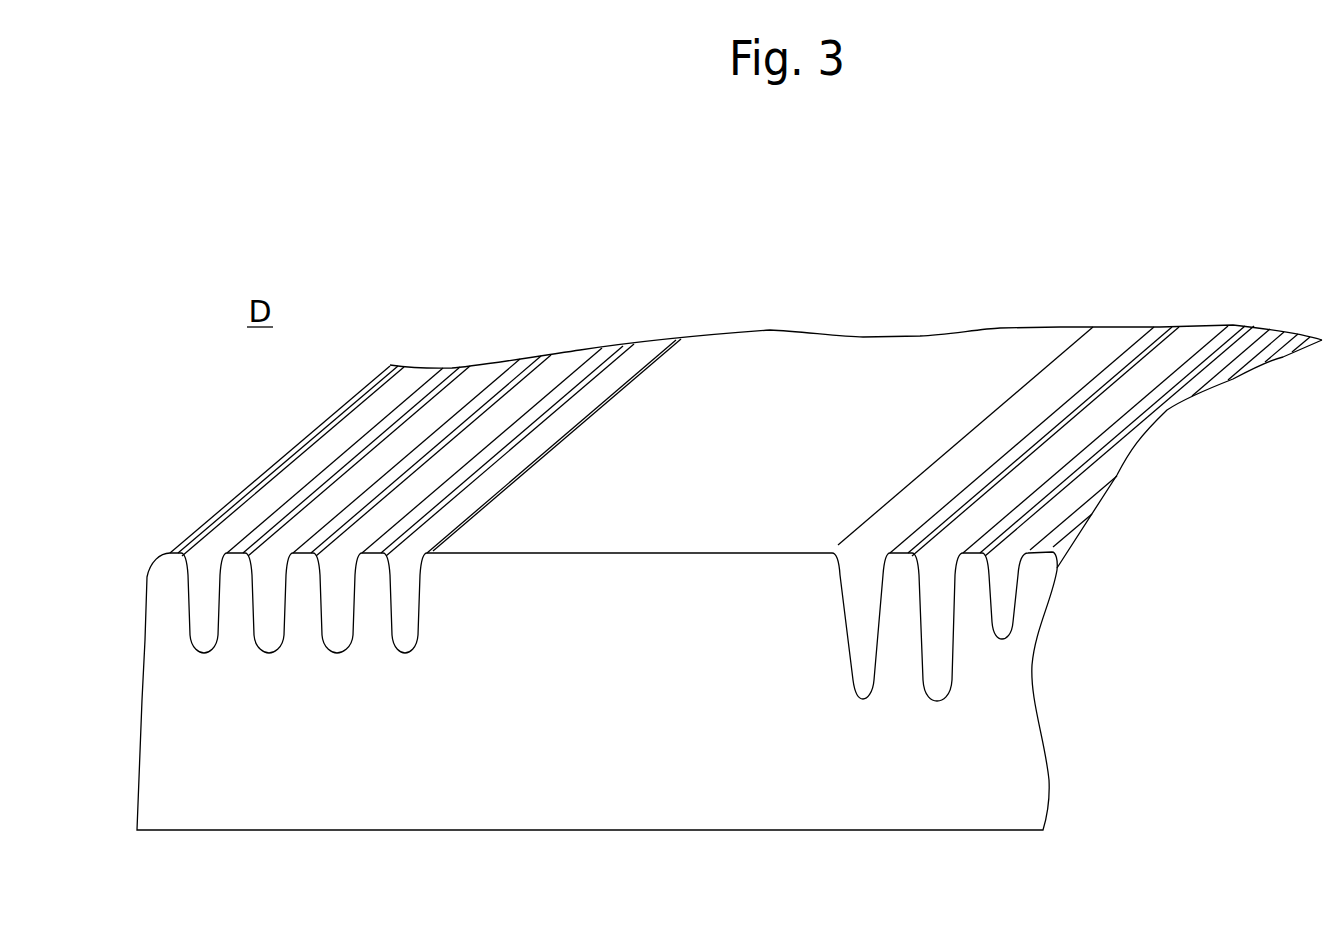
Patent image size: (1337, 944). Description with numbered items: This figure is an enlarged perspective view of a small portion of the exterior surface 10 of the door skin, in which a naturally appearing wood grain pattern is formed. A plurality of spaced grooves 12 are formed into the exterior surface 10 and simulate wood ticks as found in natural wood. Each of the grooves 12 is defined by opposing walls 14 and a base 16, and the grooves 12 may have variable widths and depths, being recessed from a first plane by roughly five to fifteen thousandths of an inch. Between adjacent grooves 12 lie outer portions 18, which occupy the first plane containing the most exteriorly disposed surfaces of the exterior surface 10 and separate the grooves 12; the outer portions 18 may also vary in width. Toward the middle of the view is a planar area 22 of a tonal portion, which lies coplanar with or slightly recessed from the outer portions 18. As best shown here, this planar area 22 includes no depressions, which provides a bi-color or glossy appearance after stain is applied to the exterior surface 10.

The exterior surface 10 is at (1078, 260).
The grooves 12 is at (1182, 334).
The walls 14 is at (322, 622).
The base 16 is at (206, 638).
The outer portions 18 is at (393, 356).
The planar area 22 is at (807, 352).